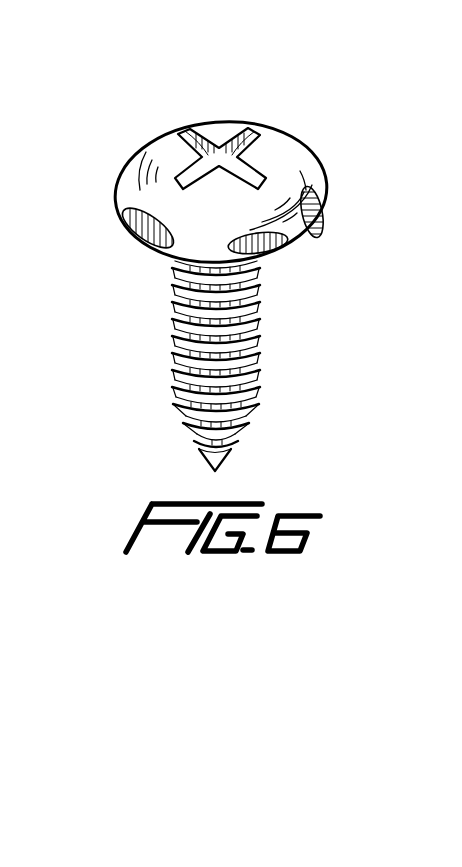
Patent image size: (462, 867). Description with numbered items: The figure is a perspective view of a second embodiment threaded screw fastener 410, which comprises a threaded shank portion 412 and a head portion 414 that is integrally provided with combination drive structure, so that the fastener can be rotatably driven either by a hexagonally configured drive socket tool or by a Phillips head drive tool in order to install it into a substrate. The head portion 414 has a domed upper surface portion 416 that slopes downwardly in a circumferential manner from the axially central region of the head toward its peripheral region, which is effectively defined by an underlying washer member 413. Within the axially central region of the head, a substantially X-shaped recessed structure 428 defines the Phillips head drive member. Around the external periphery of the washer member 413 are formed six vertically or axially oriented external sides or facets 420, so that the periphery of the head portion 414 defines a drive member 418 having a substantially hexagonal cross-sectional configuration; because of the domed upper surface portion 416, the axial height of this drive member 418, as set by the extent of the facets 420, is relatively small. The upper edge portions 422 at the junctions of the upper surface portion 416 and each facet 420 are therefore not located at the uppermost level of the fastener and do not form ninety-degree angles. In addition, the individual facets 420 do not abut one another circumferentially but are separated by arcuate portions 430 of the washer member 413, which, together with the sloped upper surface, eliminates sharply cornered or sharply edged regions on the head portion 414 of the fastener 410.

The threaded screw fastener 410 is at (294, 112).
The threaded shank portion 412 is at (263, 367).
The washer member 413 is at (118, 208).
The head portion 414 is at (166, 128).
The upper surface portion 416 is at (322, 207).
The drive member 418 is at (322, 150).
The external sides or facets 420 is at (157, 250).
The upper edge portions 422 is at (125, 227).
The X-shaped recessed structure 428 is at (221, 148).
The arcuate portions 430 is at (293, 242).